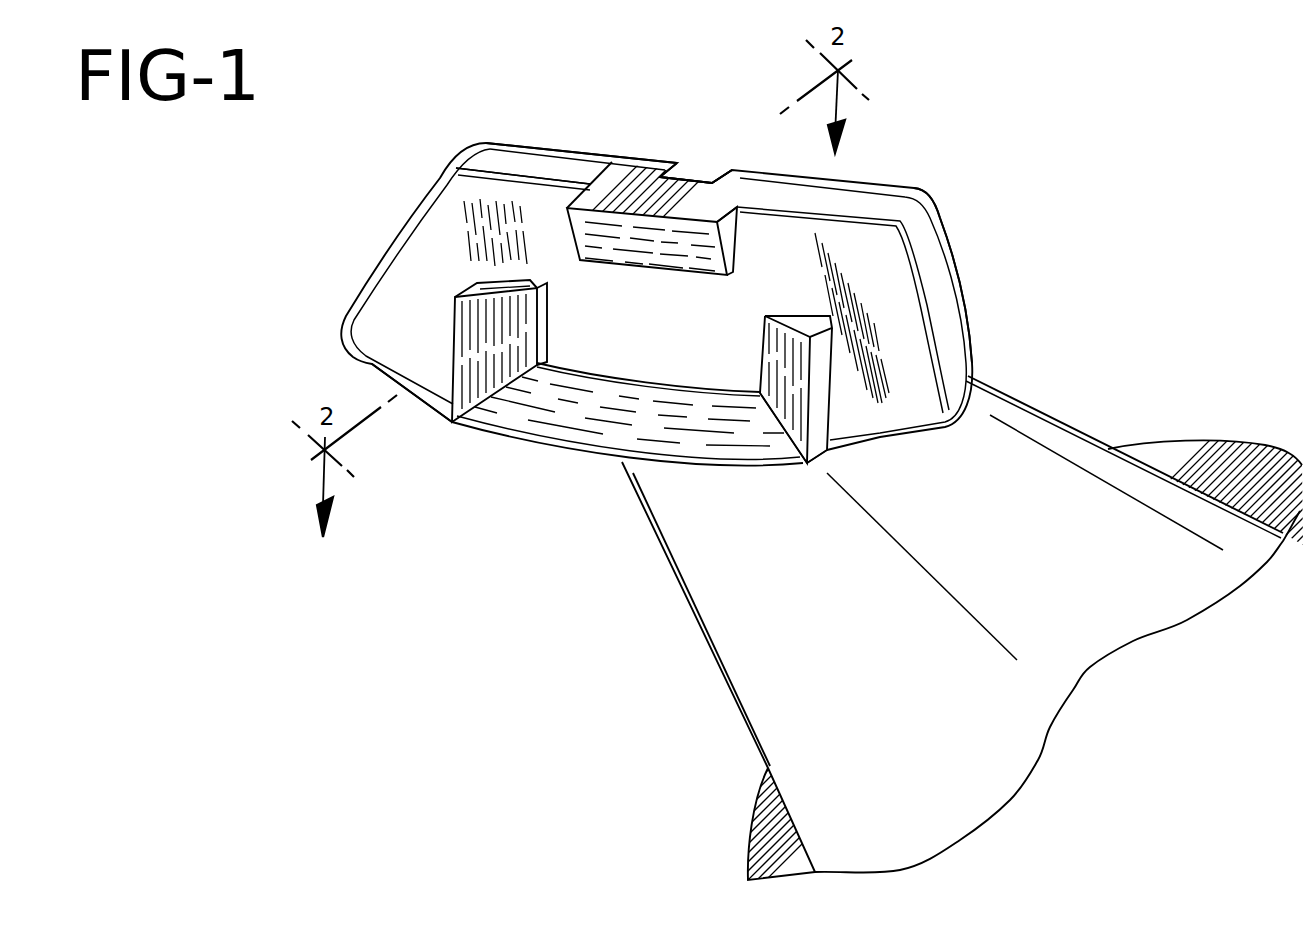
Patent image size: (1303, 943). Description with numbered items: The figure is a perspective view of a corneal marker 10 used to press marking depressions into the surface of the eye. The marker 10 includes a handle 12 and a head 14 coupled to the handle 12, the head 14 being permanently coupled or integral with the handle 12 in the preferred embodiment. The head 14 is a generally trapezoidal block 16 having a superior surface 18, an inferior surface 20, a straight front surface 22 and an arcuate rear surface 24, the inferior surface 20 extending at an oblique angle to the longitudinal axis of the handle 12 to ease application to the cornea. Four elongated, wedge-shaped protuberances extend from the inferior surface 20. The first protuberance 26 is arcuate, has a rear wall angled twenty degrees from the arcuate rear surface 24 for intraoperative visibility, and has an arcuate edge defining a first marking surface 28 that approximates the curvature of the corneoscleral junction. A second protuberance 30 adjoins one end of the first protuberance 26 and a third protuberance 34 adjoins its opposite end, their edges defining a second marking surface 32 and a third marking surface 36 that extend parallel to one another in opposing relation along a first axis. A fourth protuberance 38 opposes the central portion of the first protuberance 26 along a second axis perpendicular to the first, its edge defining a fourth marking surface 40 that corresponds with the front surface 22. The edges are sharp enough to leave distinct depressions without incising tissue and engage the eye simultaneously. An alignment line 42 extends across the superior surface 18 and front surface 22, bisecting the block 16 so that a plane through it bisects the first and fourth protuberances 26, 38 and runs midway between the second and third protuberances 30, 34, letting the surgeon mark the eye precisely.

The marker 10 is at (285, 738).
The handle 12 is at (695, 688).
The head 14 is at (1010, 250).
The trapezoidal block 16 is at (964, 219).
The superior surface 18 is at (942, 210).
The inferior surface 20 is at (450, 216).
The front surface 22 is at (510, 162).
The arcuate rear surface 24 is at (972, 441).
The first protuberance 26 is at (573, 438).
The first marking surface 28 is at (595, 457).
The second protuberance 30 is at (477, 350).
The second marking surface 32 is at (374, 357).
The third protuberance 34 is at (818, 376).
The third marking surface 36 is at (821, 458).
The fourth protuberance 38 is at (598, 202).
The fourth marking surface 40 is at (686, 212).
The alignment line 42 is at (694, 180).